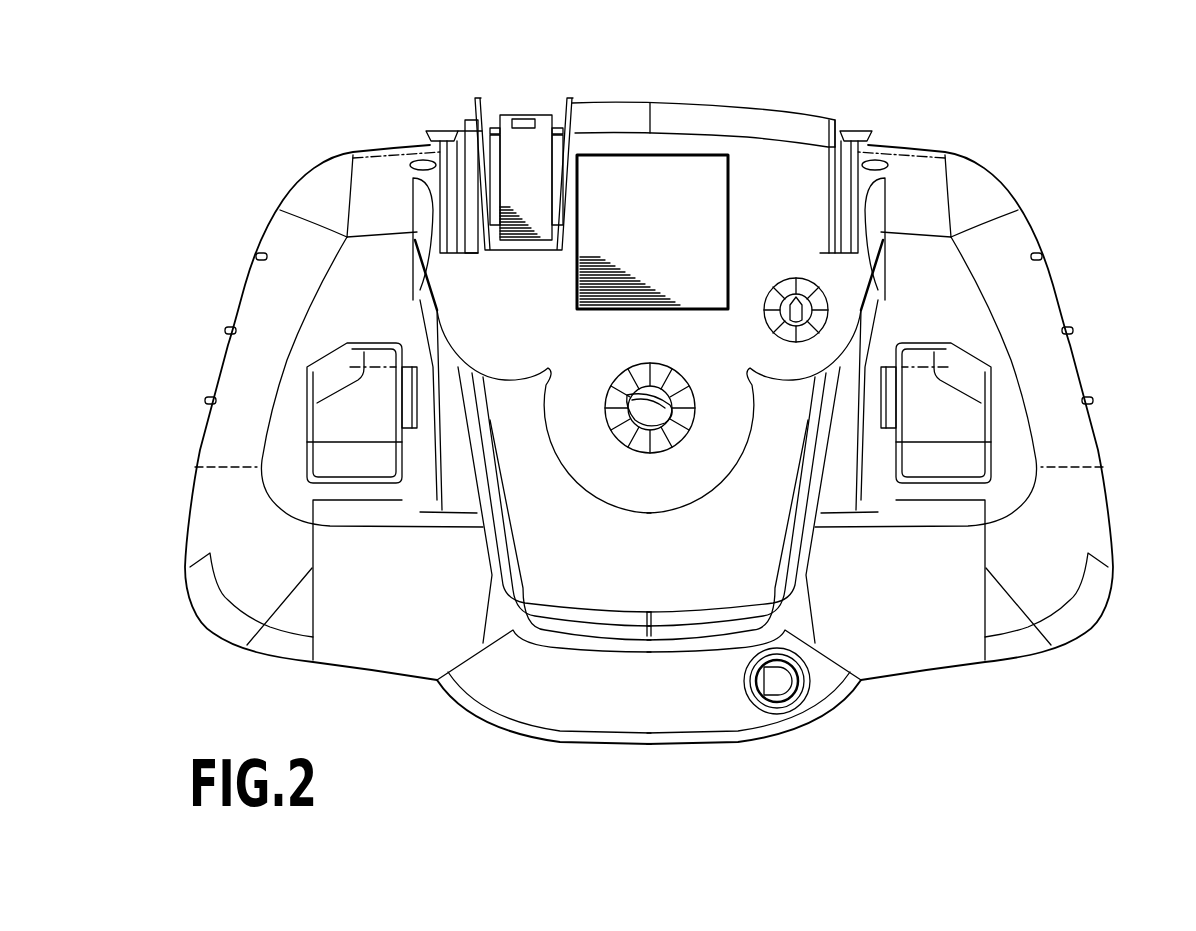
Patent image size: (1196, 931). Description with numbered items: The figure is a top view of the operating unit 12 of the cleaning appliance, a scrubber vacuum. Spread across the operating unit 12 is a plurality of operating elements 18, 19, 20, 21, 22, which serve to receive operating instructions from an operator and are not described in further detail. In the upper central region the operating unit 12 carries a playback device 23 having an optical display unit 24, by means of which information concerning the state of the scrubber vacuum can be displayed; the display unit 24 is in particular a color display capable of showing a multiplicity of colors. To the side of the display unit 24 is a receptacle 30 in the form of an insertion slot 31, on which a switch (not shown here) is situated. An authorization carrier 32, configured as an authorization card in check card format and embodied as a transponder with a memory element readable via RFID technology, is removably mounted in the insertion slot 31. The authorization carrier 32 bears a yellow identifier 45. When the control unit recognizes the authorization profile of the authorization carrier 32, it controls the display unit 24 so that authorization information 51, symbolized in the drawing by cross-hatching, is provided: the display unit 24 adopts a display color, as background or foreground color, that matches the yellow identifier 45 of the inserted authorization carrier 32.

The operating unit 12 is at (1013, 110).
The operating element 18 is at (330, 422).
The operating element 19 is at (953, 418).
The operating element 20 is at (653, 410).
The operating element 21 is at (789, 313).
The operating element 22 is at (777, 678).
The playback device 23 is at (740, 172).
The display unit 24 is at (712, 222).
The receptacle 30 is at (585, 122).
The insertion slot 31 is at (495, 177).
The authorization carrier 32 is at (502, 127).
The identifier 45 is at (507, 222).
The authorization information 51 is at (598, 280).